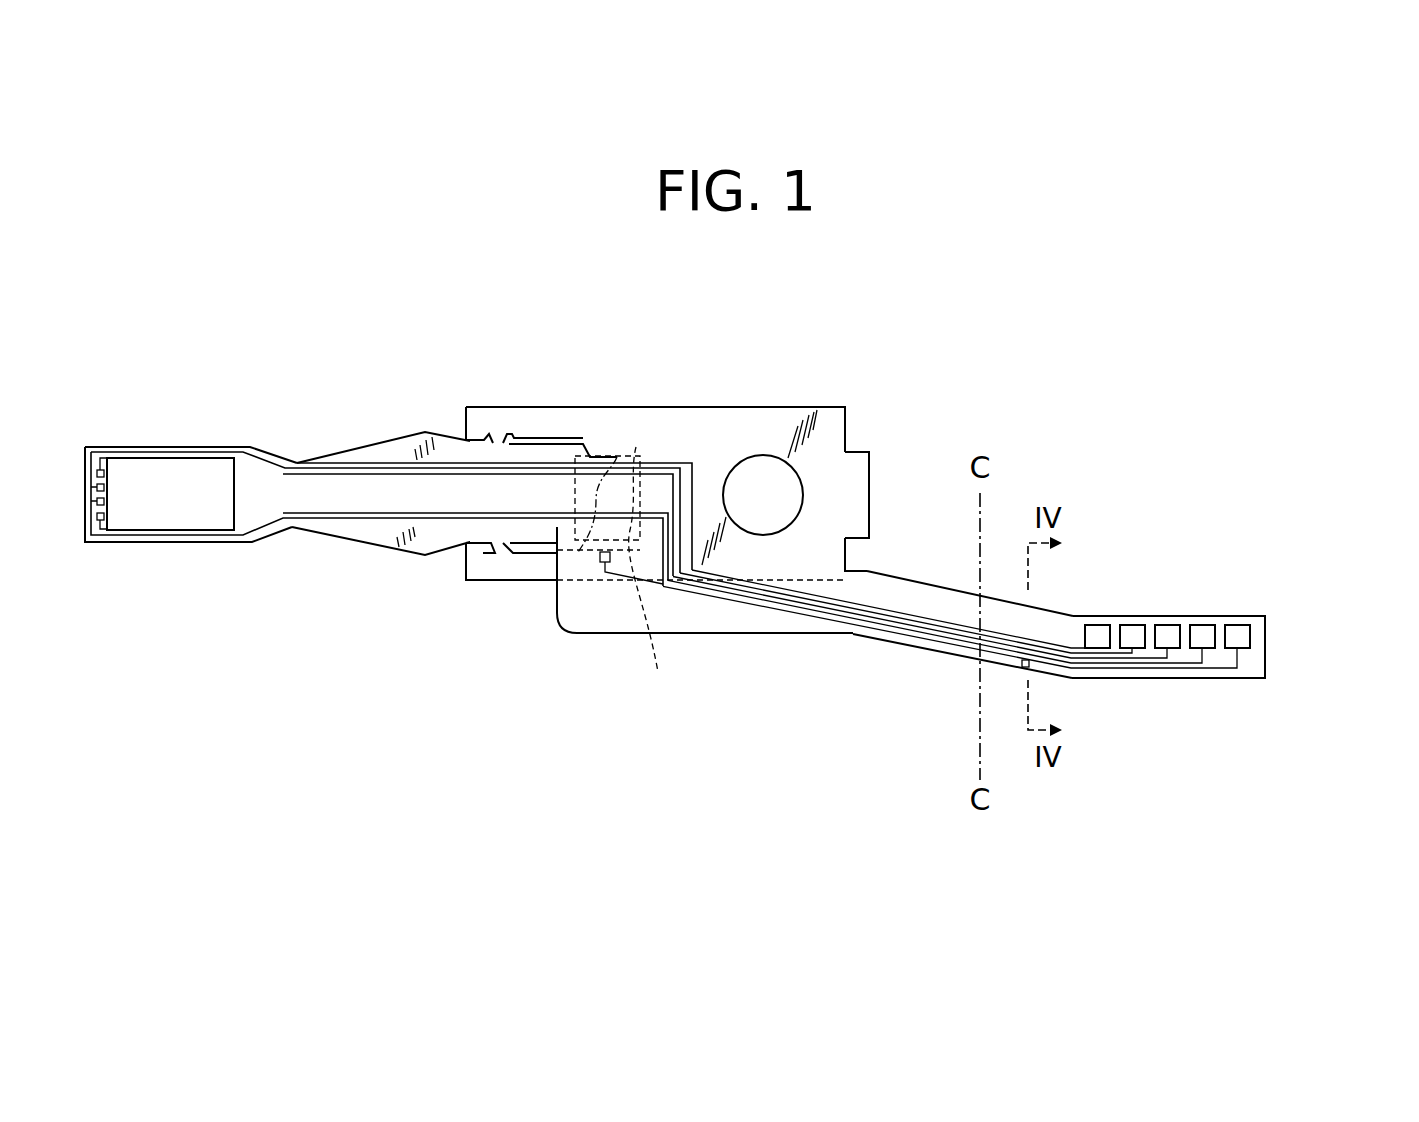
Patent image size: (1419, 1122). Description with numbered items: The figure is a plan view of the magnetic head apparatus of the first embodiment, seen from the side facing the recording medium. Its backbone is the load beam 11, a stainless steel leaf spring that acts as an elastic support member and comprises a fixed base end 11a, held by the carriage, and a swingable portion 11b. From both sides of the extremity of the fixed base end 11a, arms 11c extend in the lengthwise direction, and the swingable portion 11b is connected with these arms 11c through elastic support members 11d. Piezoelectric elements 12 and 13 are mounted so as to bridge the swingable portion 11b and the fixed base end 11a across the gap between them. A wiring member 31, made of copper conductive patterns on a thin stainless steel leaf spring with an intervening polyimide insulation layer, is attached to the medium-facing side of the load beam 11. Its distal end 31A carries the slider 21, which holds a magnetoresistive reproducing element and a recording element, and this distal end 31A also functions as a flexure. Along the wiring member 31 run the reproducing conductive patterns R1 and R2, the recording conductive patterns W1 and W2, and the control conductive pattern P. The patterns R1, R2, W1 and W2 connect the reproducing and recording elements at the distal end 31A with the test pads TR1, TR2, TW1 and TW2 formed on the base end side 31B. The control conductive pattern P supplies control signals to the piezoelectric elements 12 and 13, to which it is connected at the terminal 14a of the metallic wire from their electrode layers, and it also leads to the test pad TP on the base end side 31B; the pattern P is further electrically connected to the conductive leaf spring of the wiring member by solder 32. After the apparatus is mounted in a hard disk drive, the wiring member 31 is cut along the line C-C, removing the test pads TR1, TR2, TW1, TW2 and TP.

The load beam 11 is at (758, 398).
The fixed base end 11a is at (835, 428).
The swingable portion 11b is at (403, 457).
The arms 11c is at (562, 428).
The elastic support members 11d is at (493, 440).
The piezoelectric element 12 is at (617, 457).
The piezoelectric element 13 is at (650, 575).
The terminal 14a is at (600, 557).
The slider 21 is at (178, 484).
The wiring member 31 is at (256, 484).
The distal end 31A is at (111, 438).
The base end side 31B is at (1278, 646).
The solder 32 is at (1022, 667).
The recording conductive pattern W1 is at (944, 624).
The recording conductive pattern W2 is at (886, 612).
The reproducing conductive pattern R1 is at (946, 650).
The reproducing conductive pattern R2 is at (903, 640).
The control conductive pattern P is at (853, 636).
The test pad TW1 is at (1138, 645).
The test pad TW2 is at (1102, 648).
The test pad TR1 is at (1203, 632).
The test pad TR2 is at (1165, 632).
The test pad TP is at (1240, 632).